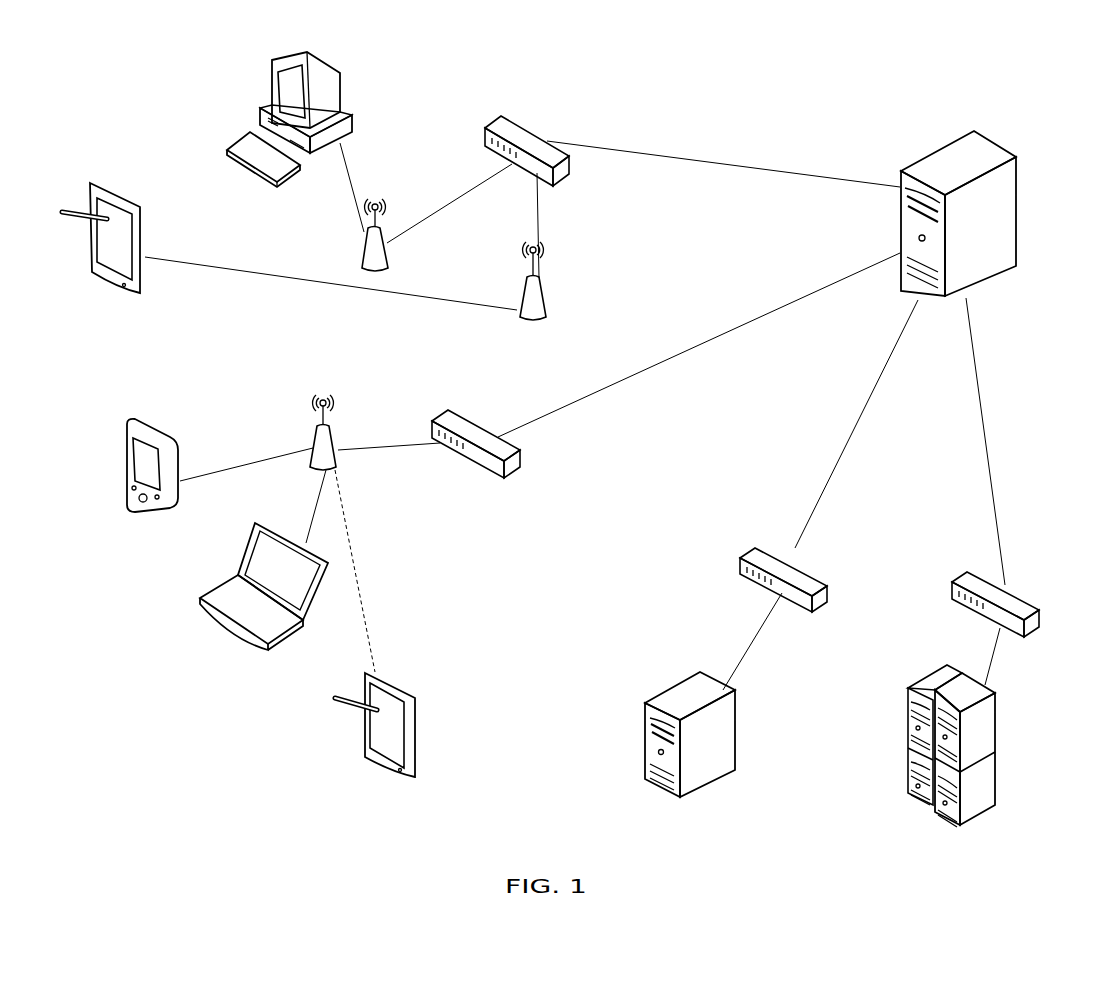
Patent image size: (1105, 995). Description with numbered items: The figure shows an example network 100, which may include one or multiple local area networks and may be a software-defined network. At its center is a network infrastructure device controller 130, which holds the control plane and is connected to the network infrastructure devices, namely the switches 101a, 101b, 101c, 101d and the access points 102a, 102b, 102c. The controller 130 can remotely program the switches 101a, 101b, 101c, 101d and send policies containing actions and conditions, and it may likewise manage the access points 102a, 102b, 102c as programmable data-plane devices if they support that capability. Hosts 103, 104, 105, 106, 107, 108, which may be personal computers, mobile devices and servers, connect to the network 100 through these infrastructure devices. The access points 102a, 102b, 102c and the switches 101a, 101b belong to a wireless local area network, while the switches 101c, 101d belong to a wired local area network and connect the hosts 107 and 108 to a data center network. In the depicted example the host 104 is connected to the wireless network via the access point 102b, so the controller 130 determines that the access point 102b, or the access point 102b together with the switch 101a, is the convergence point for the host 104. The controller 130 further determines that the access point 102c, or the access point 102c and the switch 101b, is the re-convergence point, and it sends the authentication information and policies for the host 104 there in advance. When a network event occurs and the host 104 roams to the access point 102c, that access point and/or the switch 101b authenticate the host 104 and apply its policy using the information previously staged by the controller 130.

The network 100 is at (500, 14).
The host 103 is at (283, 119).
The host 104 is at (333, 516).
The host 105 is at (133, 473).
The host 106 is at (264, 602).
The host 107 is at (690, 746).
The host 108 is at (946, 751).
The switch 101a is at (534, 136).
The switch 101b is at (476, 423).
The switch 101c is at (755, 575).
The switch 101d is at (1022, 601).
The access point 102a is at (401, 246).
The access point 102b is at (555, 292).
The access point 102c is at (350, 451).
The network infrastructure device controller 130 is at (956, 176).